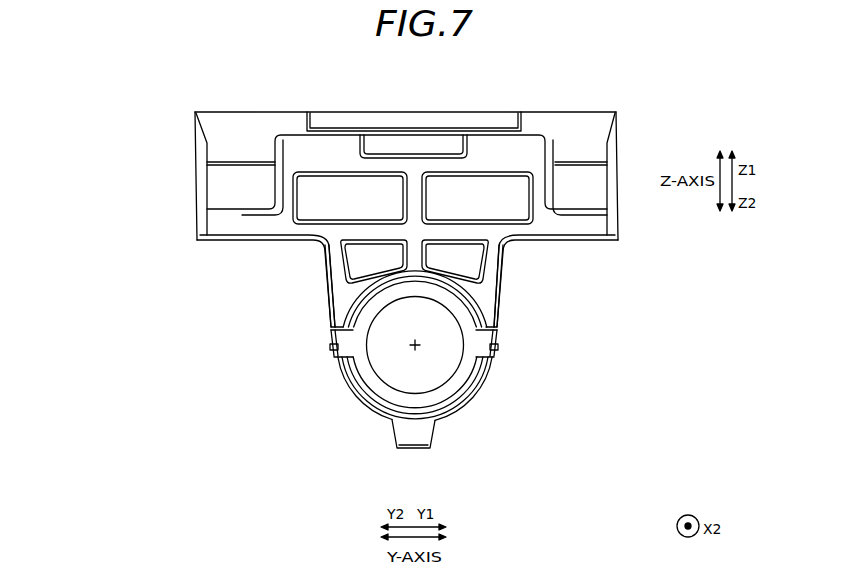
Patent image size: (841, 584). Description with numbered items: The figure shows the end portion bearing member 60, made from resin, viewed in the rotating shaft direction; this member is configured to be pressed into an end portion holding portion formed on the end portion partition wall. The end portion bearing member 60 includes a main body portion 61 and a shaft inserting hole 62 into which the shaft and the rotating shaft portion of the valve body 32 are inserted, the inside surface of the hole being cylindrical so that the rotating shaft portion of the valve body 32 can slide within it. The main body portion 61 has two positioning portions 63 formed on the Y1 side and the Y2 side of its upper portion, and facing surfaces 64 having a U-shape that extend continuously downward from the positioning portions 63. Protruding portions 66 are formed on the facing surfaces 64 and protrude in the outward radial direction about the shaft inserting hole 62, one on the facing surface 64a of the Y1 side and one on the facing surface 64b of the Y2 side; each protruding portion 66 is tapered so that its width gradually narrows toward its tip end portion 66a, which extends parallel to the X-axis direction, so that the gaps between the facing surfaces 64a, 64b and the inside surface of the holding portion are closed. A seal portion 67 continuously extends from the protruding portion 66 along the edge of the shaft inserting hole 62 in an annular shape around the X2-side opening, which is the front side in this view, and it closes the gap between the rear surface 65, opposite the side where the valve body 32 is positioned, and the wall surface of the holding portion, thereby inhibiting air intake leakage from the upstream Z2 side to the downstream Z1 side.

The end portion bearing member 60 is at (643, 103).
The main body portion 61 is at (417, 114).
The shaft inserting hole 62 is at (457, 403).
The positioning portion 63 is at (292, 242).
The facing surfaces 64 is at (412, 290).
The facing surface of the one side 64a is at (500, 293).
The facing surface of the other side 64b is at (327, 293).
The rear surface 65 is at (492, 273).
The protruding portion 66 is at (653, 373).
The tip end portion 66a is at (330, 357).
The seal portion 67 is at (369, 379).
The valve body 32 is at (417, 349).